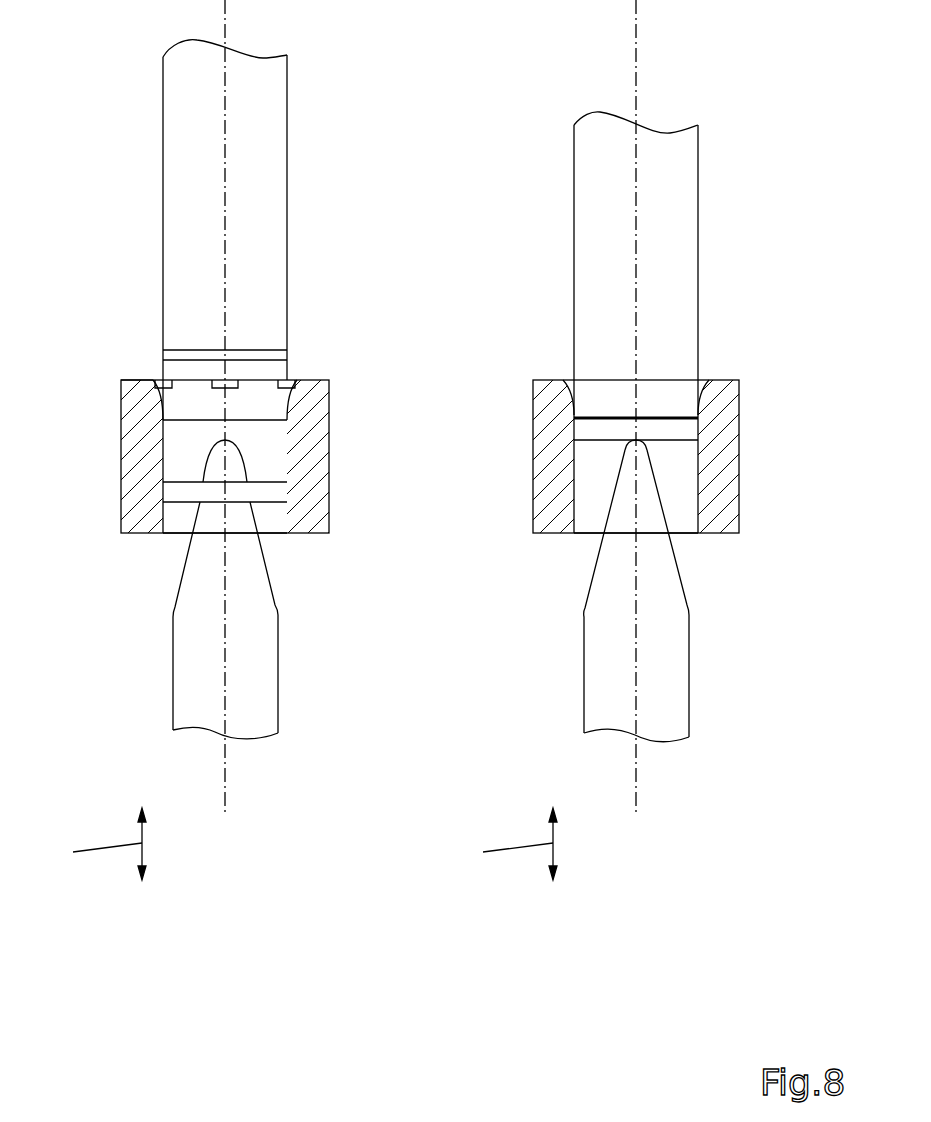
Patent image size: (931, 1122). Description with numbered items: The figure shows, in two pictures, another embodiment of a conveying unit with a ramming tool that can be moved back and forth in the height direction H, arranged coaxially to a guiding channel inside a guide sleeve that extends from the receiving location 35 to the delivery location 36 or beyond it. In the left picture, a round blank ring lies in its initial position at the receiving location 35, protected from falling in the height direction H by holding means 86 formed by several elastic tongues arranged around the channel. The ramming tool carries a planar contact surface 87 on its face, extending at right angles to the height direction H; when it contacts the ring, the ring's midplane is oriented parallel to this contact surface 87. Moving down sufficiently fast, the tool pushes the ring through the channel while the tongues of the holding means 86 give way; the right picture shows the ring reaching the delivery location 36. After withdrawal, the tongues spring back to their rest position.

The receiving location 35 is at (297, 348).
The delivery location 36 is at (597, 440).
The holding means 86 is at (137, 378).
The contact surface 87 is at (281, 352).
The height direction H is at (306, 844).